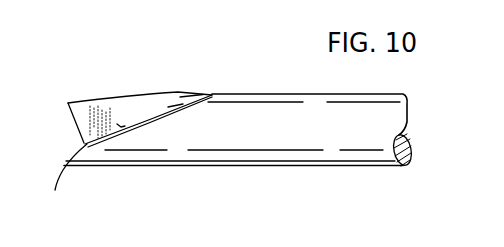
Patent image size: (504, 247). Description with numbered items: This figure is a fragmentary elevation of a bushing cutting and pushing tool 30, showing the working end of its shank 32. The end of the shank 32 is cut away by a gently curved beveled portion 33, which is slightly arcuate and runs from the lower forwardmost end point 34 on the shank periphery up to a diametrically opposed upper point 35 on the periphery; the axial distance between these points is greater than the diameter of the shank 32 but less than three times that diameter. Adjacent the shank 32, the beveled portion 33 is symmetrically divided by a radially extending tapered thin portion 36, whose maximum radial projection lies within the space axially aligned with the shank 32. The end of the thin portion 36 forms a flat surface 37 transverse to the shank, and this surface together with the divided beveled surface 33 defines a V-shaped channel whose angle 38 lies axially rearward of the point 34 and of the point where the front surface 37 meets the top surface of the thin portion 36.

The tool 30 is at (240, 78).
The shank 32 is at (350, 163).
The beveled portion 33 is at (125, 128).
The lower forwardmost end point 34 is at (55, 190).
The upper point 35 is at (216, 92).
The thin portion 36 is at (110, 101).
The flat surface 37 is at (77, 120).
The angle 38 is at (80, 147).